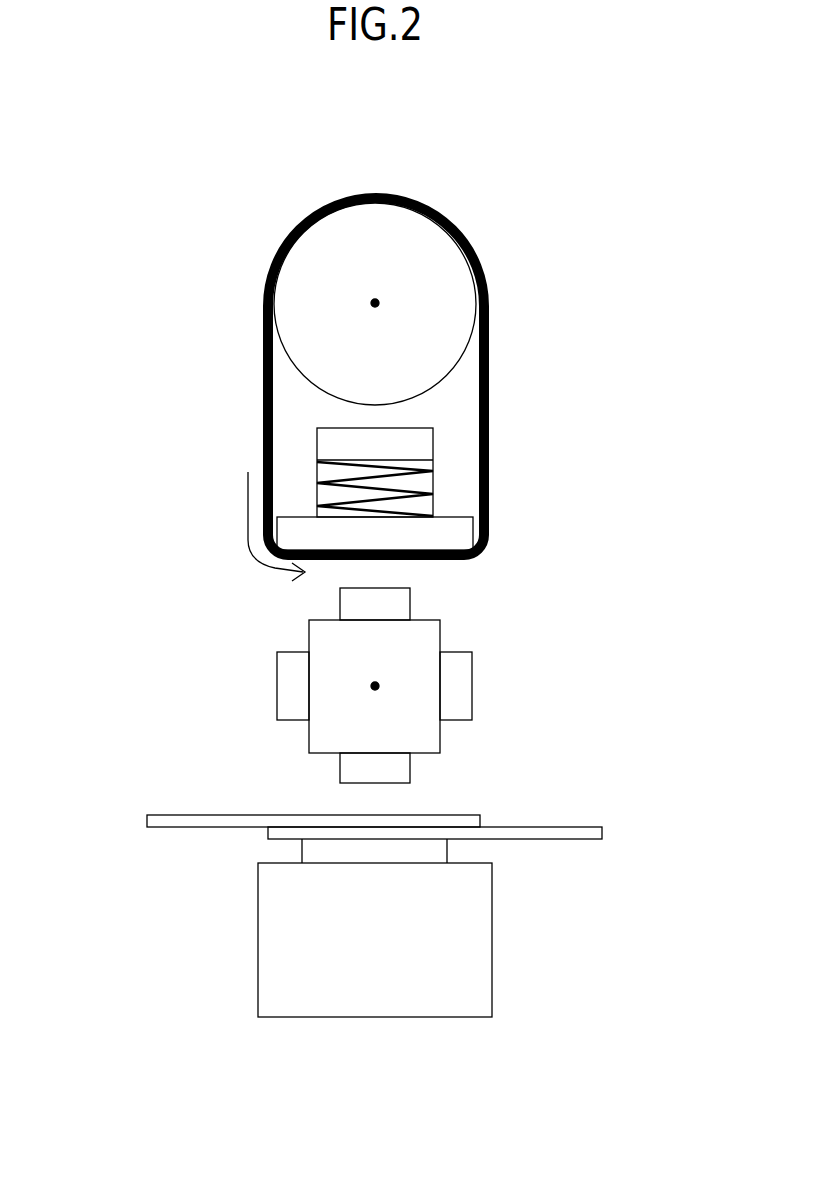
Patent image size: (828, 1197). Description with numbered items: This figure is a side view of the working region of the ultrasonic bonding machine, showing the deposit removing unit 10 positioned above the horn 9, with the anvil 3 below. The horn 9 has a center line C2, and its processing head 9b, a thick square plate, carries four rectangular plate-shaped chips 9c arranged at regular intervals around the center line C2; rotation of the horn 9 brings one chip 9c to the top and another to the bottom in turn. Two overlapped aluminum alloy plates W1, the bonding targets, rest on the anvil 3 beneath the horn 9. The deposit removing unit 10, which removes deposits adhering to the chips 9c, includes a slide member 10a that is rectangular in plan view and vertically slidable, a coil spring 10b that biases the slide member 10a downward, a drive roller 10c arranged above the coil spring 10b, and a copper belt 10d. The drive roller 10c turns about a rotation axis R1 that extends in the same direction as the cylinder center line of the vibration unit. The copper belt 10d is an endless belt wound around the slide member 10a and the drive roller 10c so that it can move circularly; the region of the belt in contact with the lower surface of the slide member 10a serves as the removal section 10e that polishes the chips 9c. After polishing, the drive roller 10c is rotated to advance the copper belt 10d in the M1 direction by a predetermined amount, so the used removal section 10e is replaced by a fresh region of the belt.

The deposit removing unit 10 is at (525, 281).
The slide member 10a is at (473, 532).
The coil spring 10b is at (408, 486).
The drive roller 10c is at (443, 380).
The copper belt 10d is at (263, 386).
The removal section 10e is at (437, 562).
The rotation axis R1 is at (375, 299).
The M1 direction M1 is at (255, 526).
The horn 9 is at (384, 697).
The processing head 9b is at (440, 628).
The chips 9c is at (340, 600).
The center line C2 is at (375, 686).
The aluminum alloy plates W1 is at (147, 820).
The anvil 3 is at (495, 942).